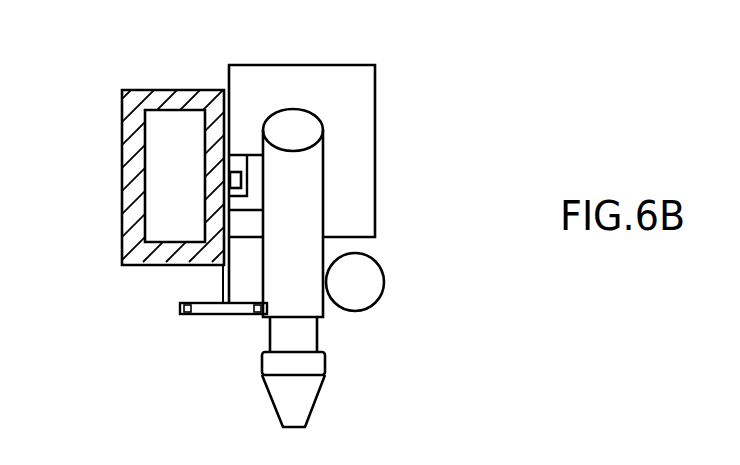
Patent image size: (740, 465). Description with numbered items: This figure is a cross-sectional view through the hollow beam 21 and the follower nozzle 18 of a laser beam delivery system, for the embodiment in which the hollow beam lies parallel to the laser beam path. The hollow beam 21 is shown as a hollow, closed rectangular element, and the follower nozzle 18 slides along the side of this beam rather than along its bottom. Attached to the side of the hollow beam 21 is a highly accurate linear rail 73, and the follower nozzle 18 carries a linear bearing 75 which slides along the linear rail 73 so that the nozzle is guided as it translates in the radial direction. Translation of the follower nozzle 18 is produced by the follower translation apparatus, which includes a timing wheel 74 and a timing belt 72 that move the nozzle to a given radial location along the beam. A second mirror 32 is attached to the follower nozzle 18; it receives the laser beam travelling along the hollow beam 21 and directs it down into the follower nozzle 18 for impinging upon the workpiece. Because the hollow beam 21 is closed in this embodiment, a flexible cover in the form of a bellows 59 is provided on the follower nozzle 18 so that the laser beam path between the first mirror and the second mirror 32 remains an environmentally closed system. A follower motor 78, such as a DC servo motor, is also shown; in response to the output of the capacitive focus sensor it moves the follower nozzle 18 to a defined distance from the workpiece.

The follower nozzle 18 is at (377, 380).
The hollow beam 21 is at (122, 167).
The second mirror 32 is at (300, 130).
The bellows 59 is at (376, 147).
The timing belt 72 is at (184, 316).
The linear rail 73 is at (233, 183).
The timing wheel 74 is at (232, 316).
The linear bearing 75 is at (248, 157).
The follower motor 78 is at (363, 278).